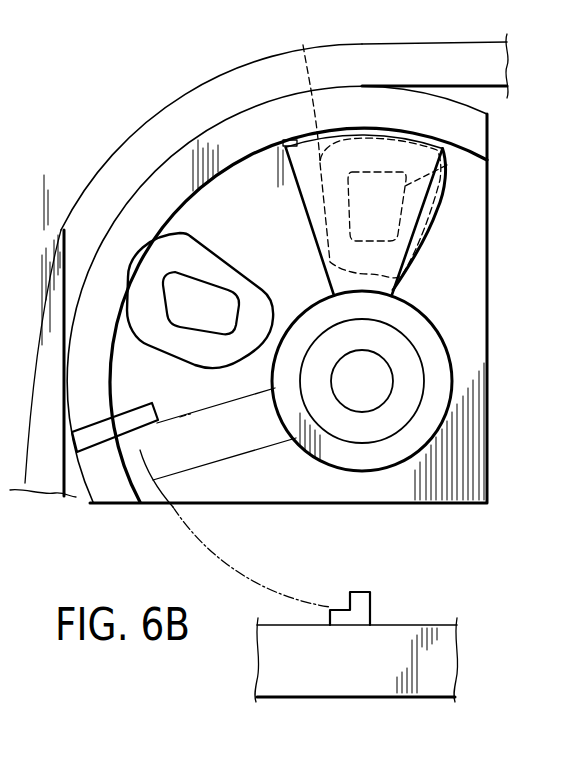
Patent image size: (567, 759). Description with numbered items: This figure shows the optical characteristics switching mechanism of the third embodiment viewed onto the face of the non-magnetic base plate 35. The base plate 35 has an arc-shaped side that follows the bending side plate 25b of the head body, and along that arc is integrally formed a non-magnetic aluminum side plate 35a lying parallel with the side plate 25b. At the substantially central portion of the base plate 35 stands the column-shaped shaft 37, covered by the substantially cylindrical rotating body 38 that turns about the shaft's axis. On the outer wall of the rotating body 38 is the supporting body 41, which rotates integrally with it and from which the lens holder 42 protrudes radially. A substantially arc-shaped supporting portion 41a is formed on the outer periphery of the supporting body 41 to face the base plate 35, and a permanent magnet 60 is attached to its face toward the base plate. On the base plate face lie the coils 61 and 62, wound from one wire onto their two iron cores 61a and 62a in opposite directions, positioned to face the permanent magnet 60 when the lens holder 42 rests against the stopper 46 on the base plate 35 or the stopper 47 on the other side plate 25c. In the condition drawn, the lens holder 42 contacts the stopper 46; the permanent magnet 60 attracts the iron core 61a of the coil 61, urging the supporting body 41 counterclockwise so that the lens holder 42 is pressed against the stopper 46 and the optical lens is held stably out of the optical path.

The side plate 25b is at (261, 70).
The side plate 35a is at (363, 98).
The base plate 35 is at (462, 477).
The supporting body 41 is at (424, 338).
The rotating body 38 is at (377, 423).
The shaft 37 is at (372, 387).
The coil 61 is at (428, 256).
The supporting portion 41a is at (445, 173).
The iron core 61a is at (447, 167).
The permanent magnet 60 is at (510, 277).
The coil 62 is at (234, 273).
The iron core 62a is at (200, 285).
The stopper 46 is at (138, 417).
The lens holder 42 is at (237, 453).
The stopper 47 is at (360, 612).
The side plate 25c is at (367, 680).